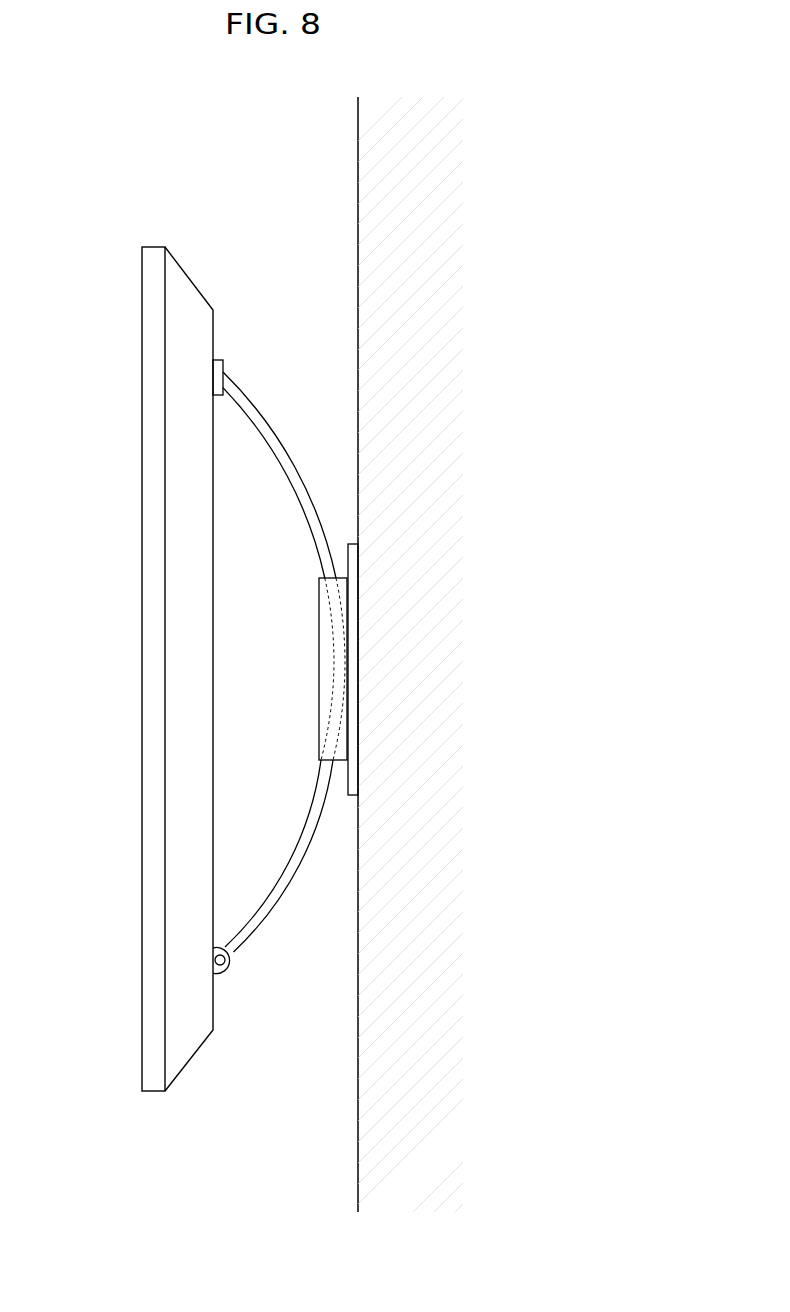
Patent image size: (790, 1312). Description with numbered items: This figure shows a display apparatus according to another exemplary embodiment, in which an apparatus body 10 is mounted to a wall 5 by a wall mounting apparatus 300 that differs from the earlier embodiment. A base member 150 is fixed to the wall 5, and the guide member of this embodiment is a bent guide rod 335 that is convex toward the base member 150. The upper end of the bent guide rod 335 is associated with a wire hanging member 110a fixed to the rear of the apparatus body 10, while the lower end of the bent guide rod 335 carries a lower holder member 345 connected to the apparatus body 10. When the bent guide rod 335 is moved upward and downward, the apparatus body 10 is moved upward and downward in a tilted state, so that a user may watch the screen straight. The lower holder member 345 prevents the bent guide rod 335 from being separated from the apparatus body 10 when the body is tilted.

The wall 5 is at (365, 168).
The apparatus body 10 is at (150, 409).
The wire hanging member 110a is at (224, 363).
The base member 150 is at (318, 653).
The wall mounting apparatus 300 is at (316, 398).
The bent guide rod 335 is at (268, 905).
The lower holder member 345 is at (228, 967).